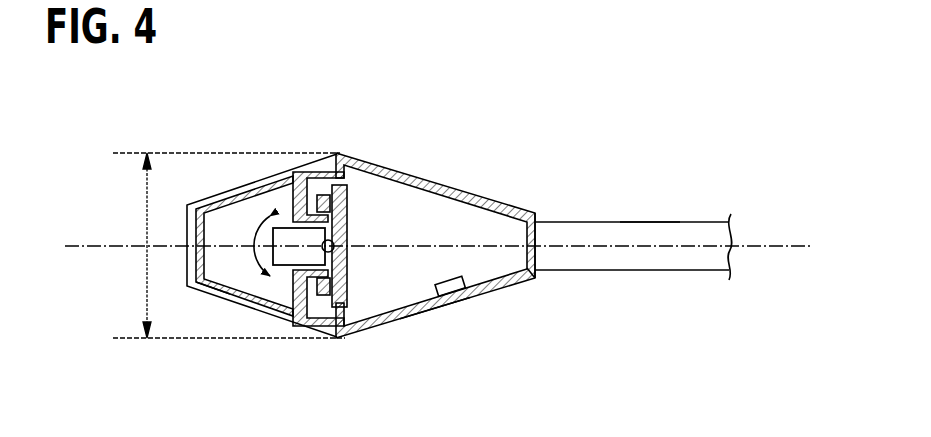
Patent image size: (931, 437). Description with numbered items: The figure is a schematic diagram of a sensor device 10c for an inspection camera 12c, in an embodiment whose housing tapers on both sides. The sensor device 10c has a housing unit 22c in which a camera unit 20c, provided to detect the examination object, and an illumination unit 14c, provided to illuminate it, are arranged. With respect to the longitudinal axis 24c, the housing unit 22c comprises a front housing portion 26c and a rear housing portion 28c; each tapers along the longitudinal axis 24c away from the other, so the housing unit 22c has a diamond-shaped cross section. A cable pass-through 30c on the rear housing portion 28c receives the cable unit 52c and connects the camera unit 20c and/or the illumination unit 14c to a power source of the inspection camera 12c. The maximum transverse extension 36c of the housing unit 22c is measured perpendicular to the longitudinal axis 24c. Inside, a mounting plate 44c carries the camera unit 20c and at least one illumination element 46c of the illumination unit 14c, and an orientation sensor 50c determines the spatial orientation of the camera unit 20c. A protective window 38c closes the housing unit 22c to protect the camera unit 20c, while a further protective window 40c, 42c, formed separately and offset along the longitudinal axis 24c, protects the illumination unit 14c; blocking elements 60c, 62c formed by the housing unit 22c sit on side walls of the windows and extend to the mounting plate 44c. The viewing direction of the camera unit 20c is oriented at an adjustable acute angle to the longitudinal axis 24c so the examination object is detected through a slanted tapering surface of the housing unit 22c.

The sensor device 10c is at (477, 190).
The inspection camera 12c is at (705, 228).
The illumination unit 14c is at (347, 208).
The camera unit 20c is at (215, 197).
The housing unit 22c is at (510, 286).
The longitudinal axis 24c is at (763, 247).
The front housing portion 26c is at (267, 181).
The rear housing portion 28c is at (535, 211).
The cable pass-through 30c is at (535, 257).
The maximum transverse extension 36c is at (147, 214).
The protective window 38c is at (210, 281).
The further protective window 40c is at (318, 175).
The further protective window 42c is at (328, 295).
The mounting plate 44c is at (346, 195).
The illumination element 46c is at (324, 197).
The orientation sensor 50c is at (457, 298).
The cable unit 52c is at (651, 222).
The blocking element 60c is at (282, 232).
The blocking element 62c is at (293, 274).